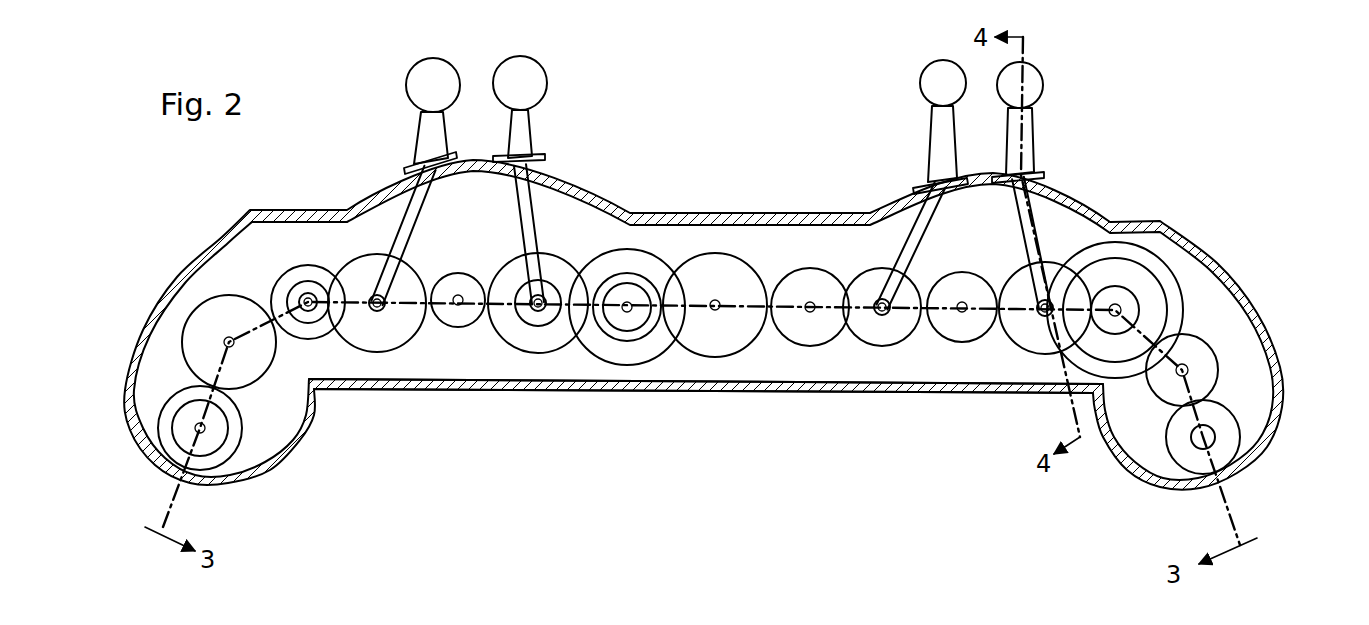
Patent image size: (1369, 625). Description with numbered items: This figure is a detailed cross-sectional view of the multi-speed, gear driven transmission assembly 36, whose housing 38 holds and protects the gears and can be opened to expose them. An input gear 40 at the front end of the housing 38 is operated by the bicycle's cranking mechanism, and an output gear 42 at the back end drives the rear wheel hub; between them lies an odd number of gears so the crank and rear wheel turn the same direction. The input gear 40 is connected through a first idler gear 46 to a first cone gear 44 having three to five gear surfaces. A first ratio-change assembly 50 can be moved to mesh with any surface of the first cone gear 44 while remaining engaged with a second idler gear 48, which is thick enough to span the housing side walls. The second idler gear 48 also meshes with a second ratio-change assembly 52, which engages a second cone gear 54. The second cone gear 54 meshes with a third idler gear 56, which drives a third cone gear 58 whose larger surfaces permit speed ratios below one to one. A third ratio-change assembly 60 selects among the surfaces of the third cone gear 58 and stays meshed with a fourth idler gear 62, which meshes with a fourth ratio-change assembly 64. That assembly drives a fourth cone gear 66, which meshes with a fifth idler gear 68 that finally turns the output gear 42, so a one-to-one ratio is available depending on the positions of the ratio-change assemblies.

The transmission assembly 36 is at (700, 389).
The housing 38 is at (500, 390).
The input gear 40 is at (1232, 437).
The output gear 42 is at (215, 445).
The first cone gear 44 is at (1127, 275).
The first idler gear 46 is at (1198, 358).
The second idler gear 48 is at (958, 337).
The first ratio-change assembly 50 is at (1030, 340).
The second ratio-change assembly 52 is at (876, 335).
The second cone gear 54 is at (805, 332).
The third idler gear 56 is at (718, 343).
The third cone gear 58 is at (630, 347).
The third ratio-change assembly 60 is at (545, 340).
The fourth idler gear 62 is at (457, 322).
The fourth ratio-change assembly 64 is at (366, 334).
The fourth cone gear 66 is at (307, 268).
The fifth idler gear 68 is at (207, 323).